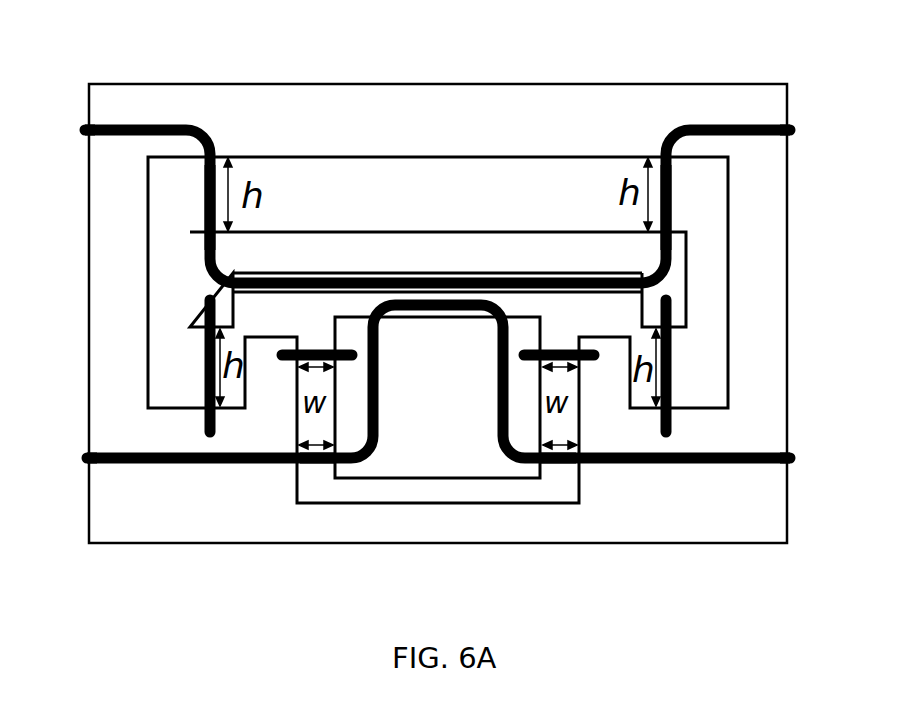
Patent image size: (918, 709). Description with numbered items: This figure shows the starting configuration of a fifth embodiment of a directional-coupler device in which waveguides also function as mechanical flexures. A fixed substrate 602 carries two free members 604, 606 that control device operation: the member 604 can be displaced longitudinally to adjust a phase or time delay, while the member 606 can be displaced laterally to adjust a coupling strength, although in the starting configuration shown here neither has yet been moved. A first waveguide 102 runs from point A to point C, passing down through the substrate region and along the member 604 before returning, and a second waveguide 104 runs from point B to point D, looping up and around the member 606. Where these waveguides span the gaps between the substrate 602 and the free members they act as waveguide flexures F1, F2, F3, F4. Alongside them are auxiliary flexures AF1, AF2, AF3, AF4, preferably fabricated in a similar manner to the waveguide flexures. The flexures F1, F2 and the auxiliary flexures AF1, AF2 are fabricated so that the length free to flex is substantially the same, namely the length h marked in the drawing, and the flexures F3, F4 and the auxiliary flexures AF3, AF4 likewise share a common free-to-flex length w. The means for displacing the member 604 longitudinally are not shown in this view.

The first waveguide 102 is at (135, 127).
The second waveguide 104 is at (137, 462).
The fixed substrate 602 is at (438, 313).
The free member 604 is at (438, 279).
The free member 606 is at (437, 397).
The waveguide flexure F1 is at (207, 198).
The waveguide flexure F2 is at (670, 201).
The waveguide flexure F3 is at (312, 463).
The waveguide flexure F4 is at (558, 463).
The auxiliary flexure AF1 is at (207, 368).
The auxiliary flexure AF2 is at (670, 373).
The auxiliary flexure AF3 is at (326, 352).
The auxiliary flexure AF4 is at (553, 353).
The point A is at (73, 132).
The point B is at (74, 462).
The point C is at (803, 134).
The point D is at (805, 462).